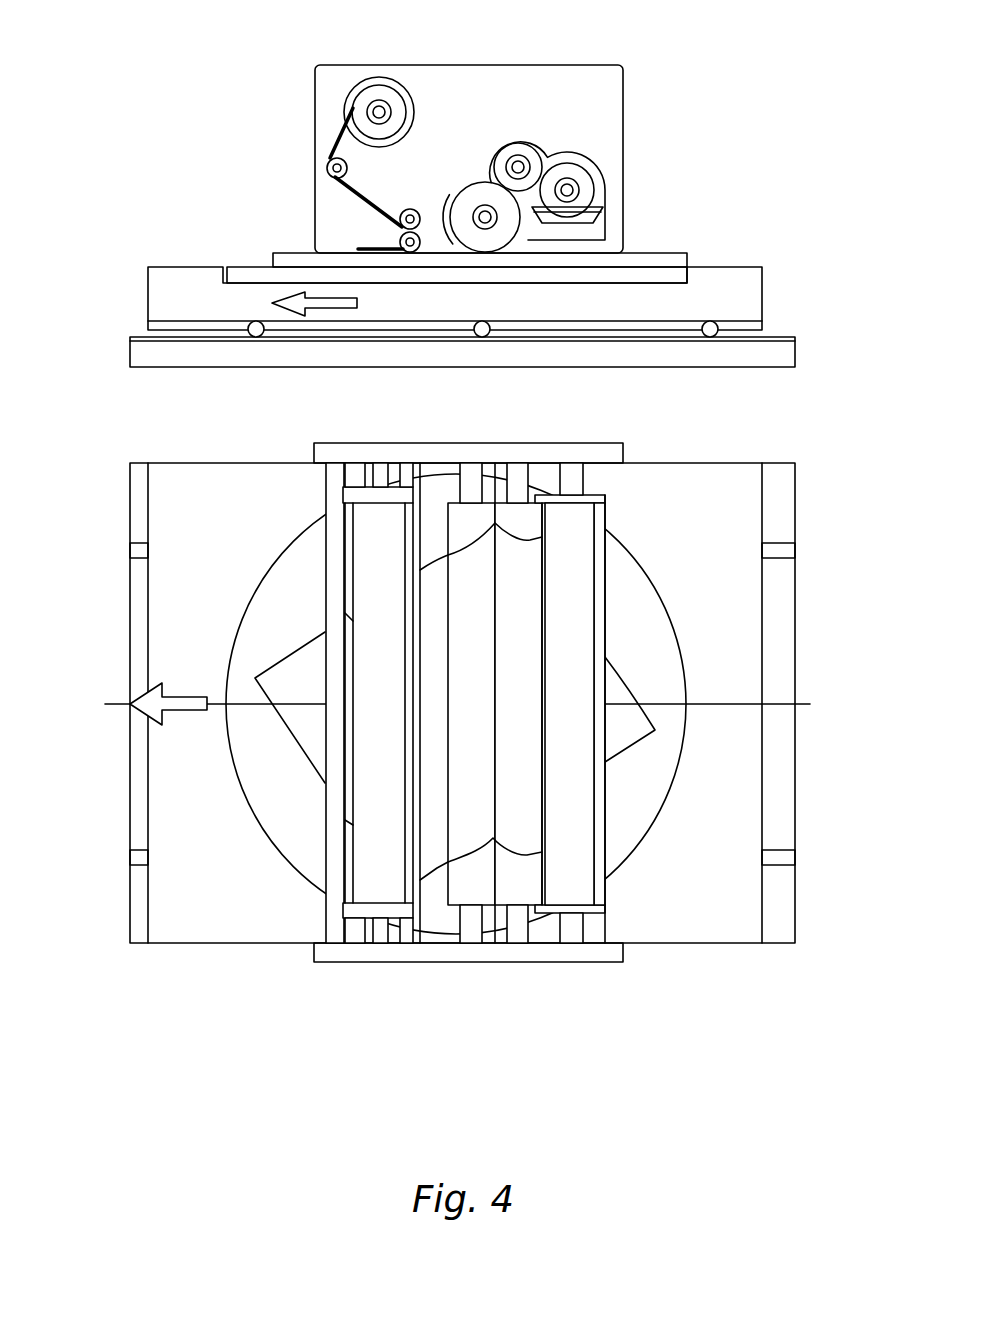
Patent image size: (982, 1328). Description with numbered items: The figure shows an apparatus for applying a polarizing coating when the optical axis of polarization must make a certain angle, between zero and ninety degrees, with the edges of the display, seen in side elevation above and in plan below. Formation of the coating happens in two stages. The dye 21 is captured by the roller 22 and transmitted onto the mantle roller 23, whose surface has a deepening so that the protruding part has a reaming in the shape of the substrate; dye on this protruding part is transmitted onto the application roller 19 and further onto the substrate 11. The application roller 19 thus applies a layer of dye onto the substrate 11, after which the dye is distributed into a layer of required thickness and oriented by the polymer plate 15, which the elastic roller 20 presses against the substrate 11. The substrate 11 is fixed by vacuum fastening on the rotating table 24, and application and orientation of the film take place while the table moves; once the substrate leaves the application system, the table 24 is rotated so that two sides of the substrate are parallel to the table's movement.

The substrate 11 is at (627, 260).
The polymer plate 15 is at (367, 248).
The application roller 19 is at (468, 232).
The elastic roller 20 is at (403, 240).
The dye 21 is at (585, 218).
The roller 22 is at (578, 184).
The mantle roller 23 is at (522, 159).
The rotating table 24 is at (273, 813).